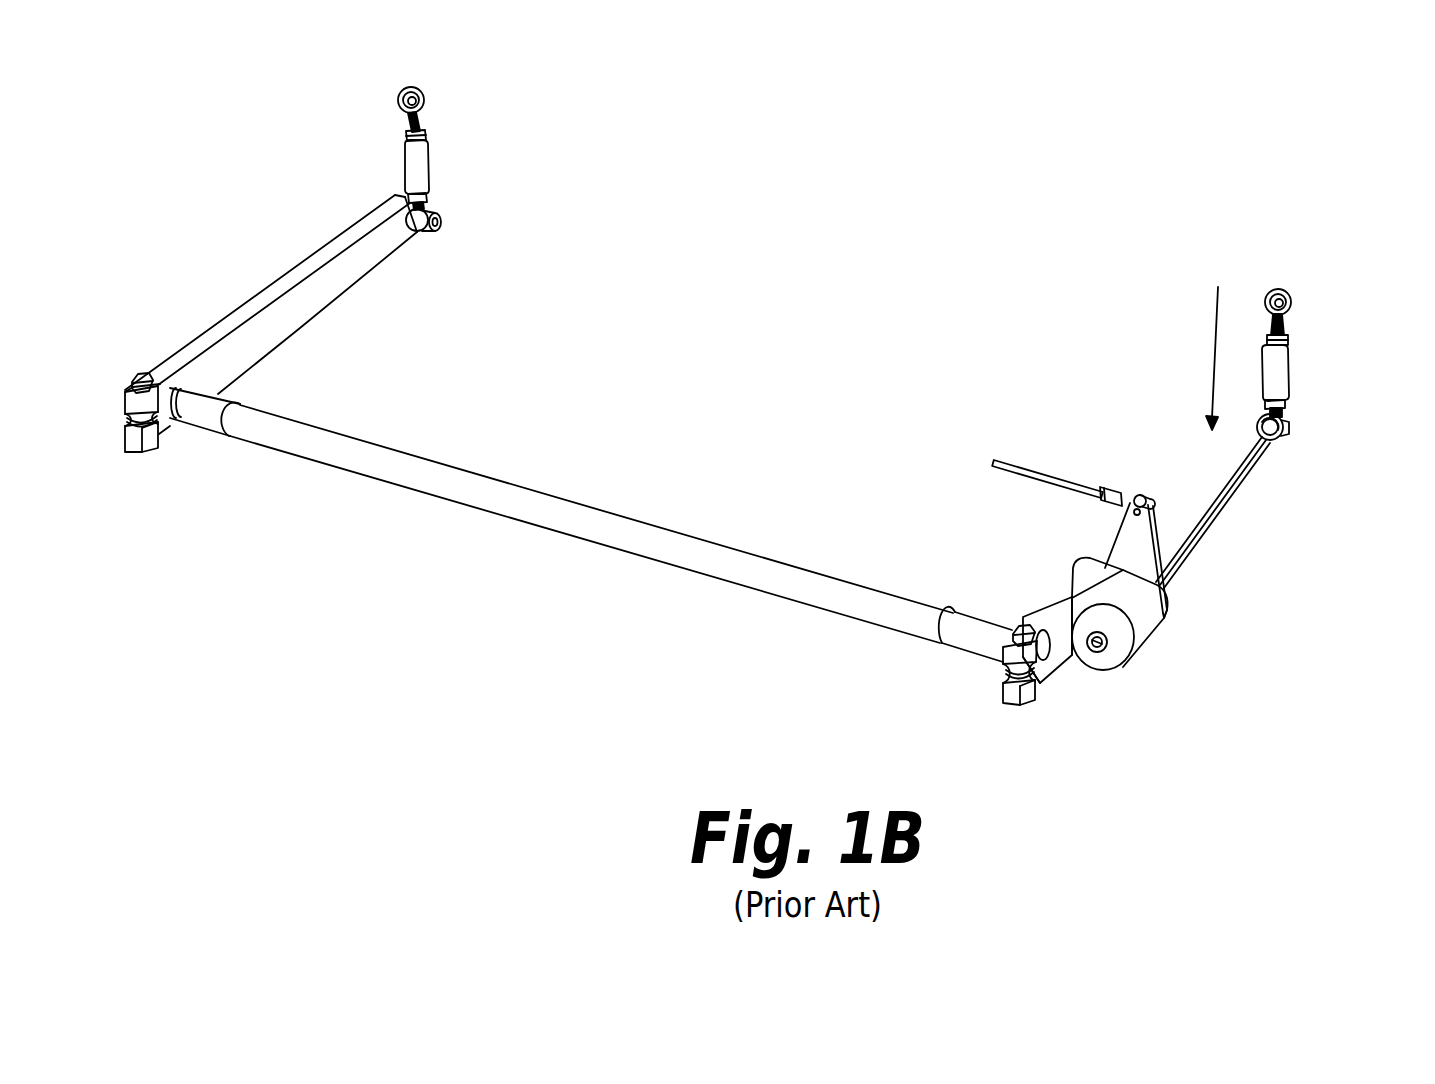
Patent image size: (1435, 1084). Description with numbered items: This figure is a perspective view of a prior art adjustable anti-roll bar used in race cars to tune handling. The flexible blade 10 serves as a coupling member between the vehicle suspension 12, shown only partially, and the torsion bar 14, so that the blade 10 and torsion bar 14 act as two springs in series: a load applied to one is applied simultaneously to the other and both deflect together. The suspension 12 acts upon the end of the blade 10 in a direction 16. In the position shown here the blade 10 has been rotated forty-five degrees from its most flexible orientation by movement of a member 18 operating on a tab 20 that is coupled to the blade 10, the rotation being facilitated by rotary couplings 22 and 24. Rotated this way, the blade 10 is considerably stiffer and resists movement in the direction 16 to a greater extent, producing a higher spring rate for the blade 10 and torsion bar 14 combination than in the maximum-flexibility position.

The blade 10 is at (1237, 490).
The vehicle suspension 12 is at (1288, 380).
The torsion bar 14 is at (590, 542).
The direction 16 is at (1212, 367).
The member 18 is at (1022, 467).
The tab 20 is at (1158, 538).
The rotary coupling 22 is at (1117, 670).
The rotary coupling 24 is at (1288, 425).